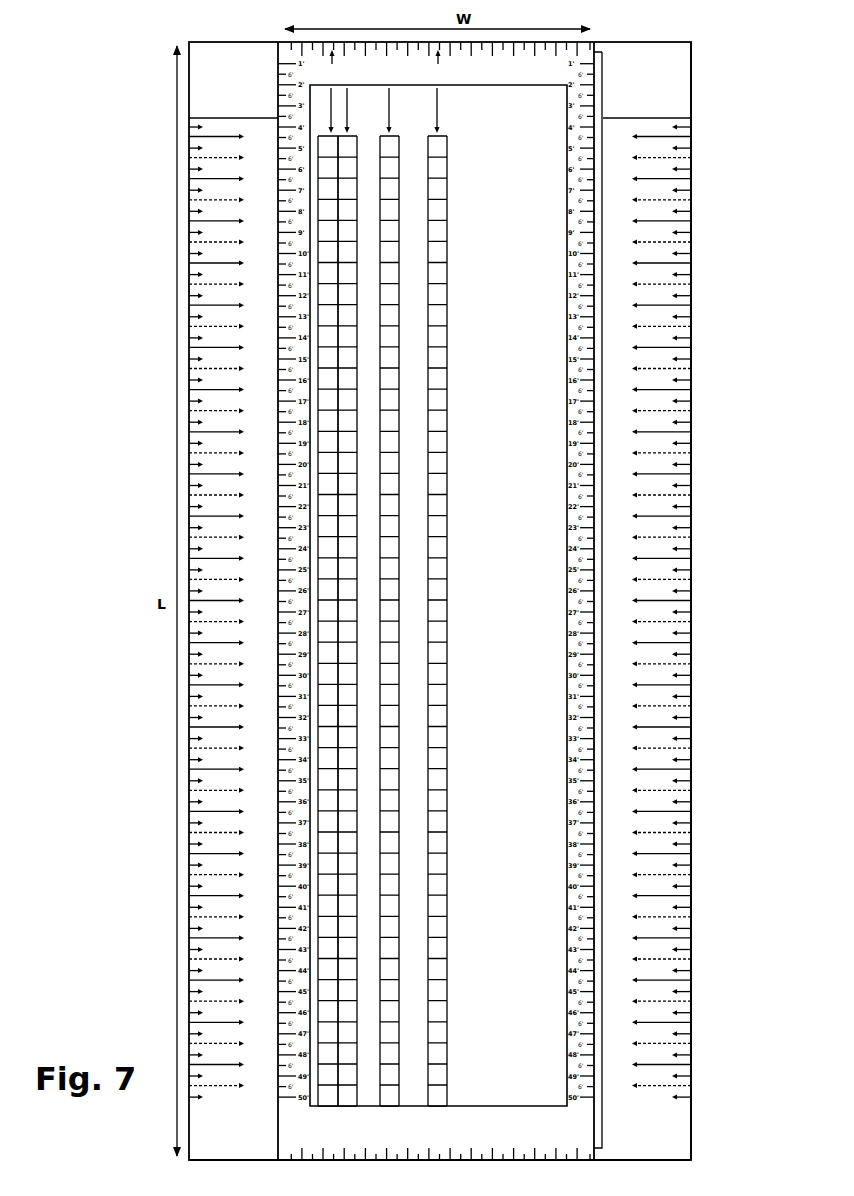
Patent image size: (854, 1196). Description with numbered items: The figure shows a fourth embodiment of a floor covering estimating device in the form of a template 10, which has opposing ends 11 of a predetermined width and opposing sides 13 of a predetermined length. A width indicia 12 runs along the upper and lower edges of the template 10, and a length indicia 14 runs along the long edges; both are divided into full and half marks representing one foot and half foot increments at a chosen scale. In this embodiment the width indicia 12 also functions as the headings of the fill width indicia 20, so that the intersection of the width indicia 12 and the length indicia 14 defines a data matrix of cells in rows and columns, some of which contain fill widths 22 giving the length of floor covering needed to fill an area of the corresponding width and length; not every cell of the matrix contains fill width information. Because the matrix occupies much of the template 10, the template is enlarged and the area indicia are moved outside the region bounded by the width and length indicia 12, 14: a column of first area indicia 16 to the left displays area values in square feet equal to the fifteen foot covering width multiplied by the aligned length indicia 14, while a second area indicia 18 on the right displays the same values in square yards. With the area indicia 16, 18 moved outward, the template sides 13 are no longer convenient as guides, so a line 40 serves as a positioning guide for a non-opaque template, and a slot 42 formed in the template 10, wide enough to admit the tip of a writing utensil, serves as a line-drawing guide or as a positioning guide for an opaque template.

The template 10 is at (289, 20).
The opposing ends 11 is at (620, 40).
The width indicia 12 is at (565, 38).
The opposing sides 13 is at (189, 320).
The length indicia 14 is at (187, 248).
The first area indicia 16 is at (198, 118).
The second area indicia 18 is at (677, 112).
The fill width indicia 20 is at (539, 82).
The fill widths 22 is at (503, 107).
The line 40 is at (278, 46).
The slot 42 is at (601, 166).